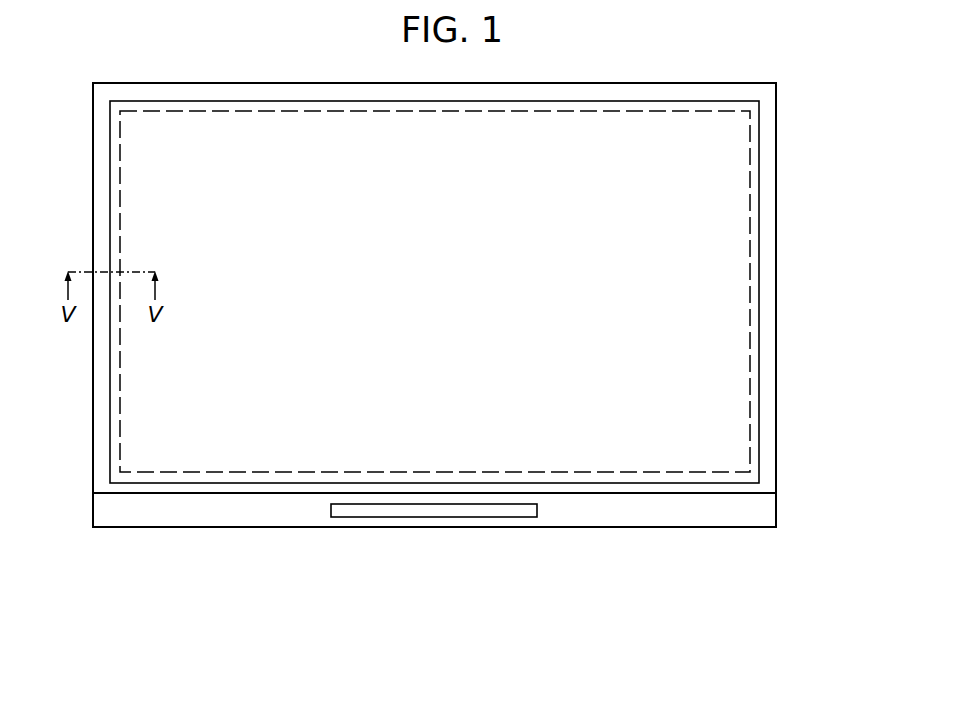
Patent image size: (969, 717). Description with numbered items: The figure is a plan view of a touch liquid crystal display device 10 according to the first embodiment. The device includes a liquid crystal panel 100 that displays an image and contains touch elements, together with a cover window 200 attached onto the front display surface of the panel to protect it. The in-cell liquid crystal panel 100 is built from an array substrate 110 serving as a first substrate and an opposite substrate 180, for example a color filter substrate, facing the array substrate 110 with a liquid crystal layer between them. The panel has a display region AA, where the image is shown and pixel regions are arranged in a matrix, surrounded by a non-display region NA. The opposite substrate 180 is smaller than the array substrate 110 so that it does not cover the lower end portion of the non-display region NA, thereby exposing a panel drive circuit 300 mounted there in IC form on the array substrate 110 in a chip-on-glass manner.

The touch liquid crystal display device 10 is at (457, 664).
The liquid crystal panel 100 is at (670, 606).
The array substrate 110 is at (728, 527).
The opposite substrate 180 is at (669, 493).
The cover window 200 is at (760, 399).
The panel drive circuit 300 is at (433, 517).
The display region AA is at (750, 342).
The non-display region NA is at (756, 248).